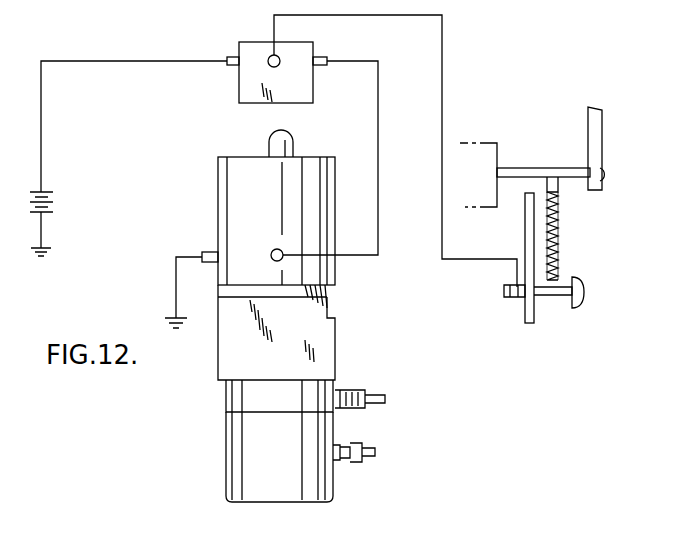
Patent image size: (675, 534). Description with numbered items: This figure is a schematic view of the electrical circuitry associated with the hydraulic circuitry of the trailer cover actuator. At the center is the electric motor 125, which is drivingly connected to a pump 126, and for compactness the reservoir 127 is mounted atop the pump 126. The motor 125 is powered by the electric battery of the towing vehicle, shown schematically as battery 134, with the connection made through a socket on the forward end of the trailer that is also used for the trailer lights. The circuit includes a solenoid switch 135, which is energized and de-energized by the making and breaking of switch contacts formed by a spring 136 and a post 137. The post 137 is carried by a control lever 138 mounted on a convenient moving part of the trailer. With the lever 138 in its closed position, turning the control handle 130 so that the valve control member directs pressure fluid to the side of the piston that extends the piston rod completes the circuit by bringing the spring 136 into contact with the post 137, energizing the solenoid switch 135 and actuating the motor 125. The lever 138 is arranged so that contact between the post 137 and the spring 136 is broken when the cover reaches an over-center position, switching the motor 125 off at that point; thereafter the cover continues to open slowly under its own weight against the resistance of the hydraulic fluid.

The motor 125 is at (235, 187).
The pump 126 is at (237, 398).
The reservoir 127 is at (248, 457).
The control handle 130 is at (590, 120).
The electric battery 134 is at (60, 200).
The solenoid switch 135 is at (296, 50).
The spring 136 is at (547, 240).
The post 137 is at (560, 300).
The control lever 138 is at (527, 315).